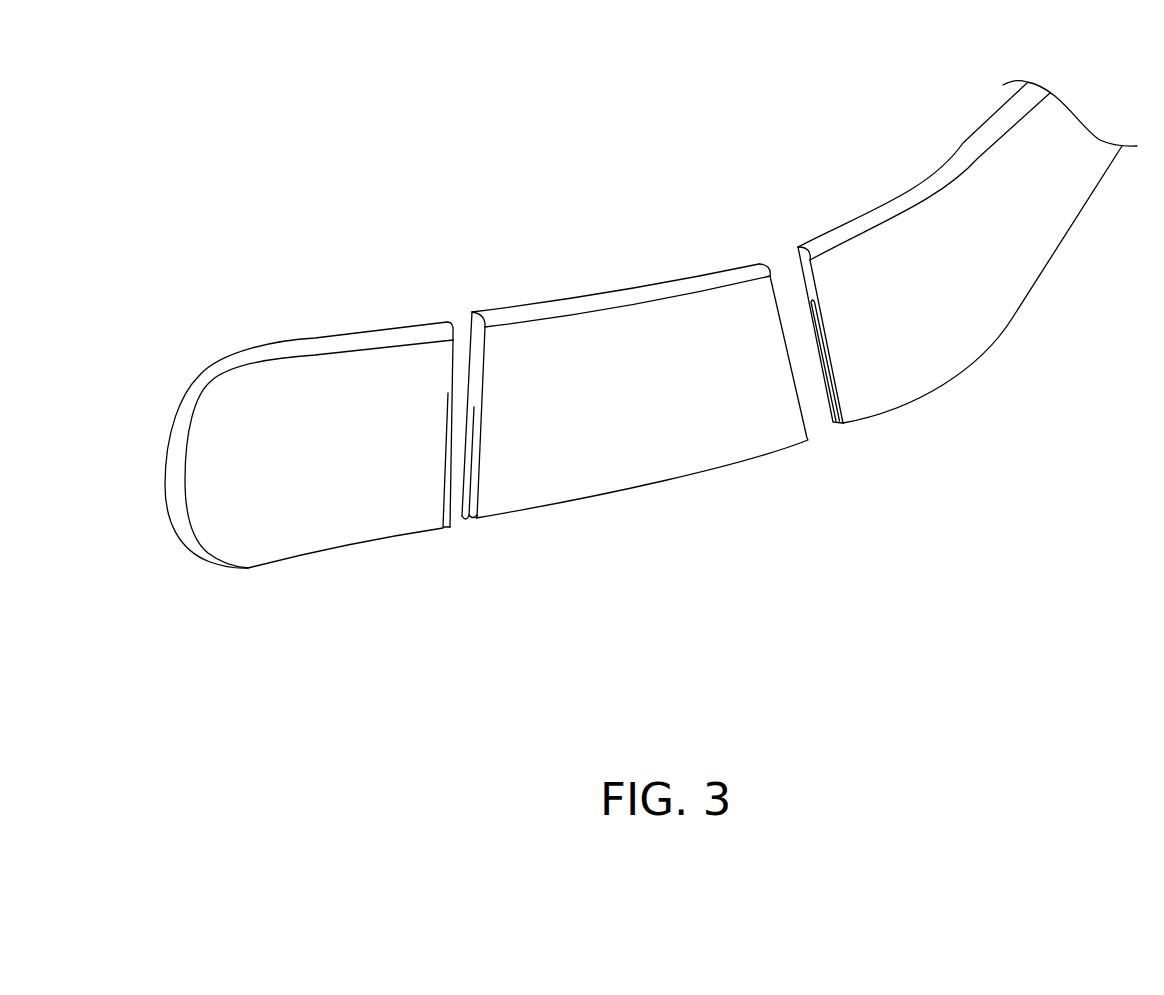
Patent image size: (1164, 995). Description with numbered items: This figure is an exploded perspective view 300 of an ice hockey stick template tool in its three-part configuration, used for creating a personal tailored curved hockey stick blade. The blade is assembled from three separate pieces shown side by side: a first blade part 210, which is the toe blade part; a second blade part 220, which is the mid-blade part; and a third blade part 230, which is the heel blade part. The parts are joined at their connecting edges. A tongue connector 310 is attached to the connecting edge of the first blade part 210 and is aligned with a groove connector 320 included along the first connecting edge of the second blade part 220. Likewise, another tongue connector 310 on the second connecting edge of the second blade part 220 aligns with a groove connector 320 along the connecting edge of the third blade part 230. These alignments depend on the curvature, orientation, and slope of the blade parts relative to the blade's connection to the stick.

The exploded perspective view of the three-part blade configuration 300 is at (1074, 455).
The first blade part 210 is at (293, 340).
The second blade part 220 is at (608, 305).
The third blade part 230 is at (887, 210).
The tongue connector 310 is at (450, 521).
The groove connector 320 is at (479, 403).